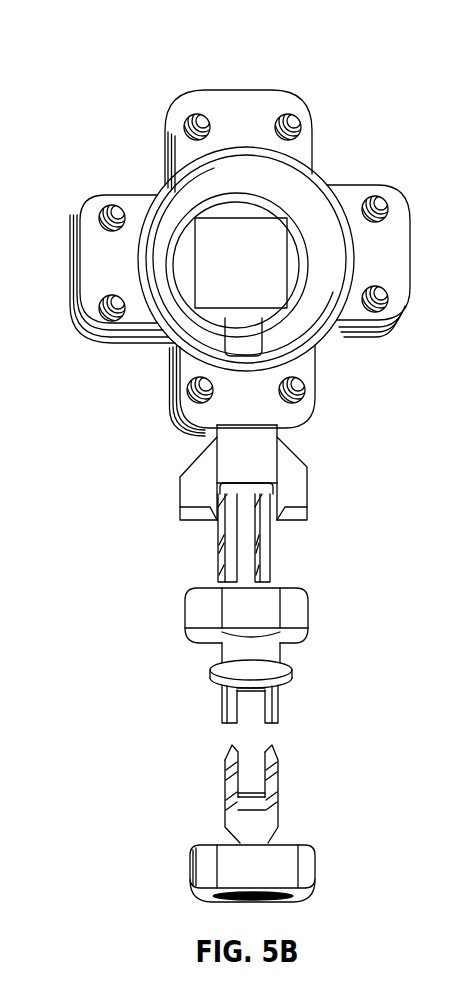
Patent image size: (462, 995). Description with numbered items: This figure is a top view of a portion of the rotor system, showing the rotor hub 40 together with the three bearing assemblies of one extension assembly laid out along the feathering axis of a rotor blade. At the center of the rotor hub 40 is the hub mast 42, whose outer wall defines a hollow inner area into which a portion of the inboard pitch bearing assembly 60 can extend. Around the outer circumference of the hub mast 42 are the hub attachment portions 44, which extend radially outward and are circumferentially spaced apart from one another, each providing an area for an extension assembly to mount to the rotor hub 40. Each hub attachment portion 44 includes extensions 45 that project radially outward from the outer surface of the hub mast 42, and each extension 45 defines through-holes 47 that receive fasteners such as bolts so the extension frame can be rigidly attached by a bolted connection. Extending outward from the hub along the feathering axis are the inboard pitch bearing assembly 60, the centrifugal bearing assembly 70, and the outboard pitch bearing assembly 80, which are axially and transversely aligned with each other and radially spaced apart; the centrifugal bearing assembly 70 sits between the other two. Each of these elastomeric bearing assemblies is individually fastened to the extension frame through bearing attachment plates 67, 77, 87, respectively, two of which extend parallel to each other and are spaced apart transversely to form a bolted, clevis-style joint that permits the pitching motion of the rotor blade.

The rotor hub 40 is at (234, 242).
The hub mast 42 is at (160, 190).
The hub attachment portions 44 is at (167, 162).
The extension 45 is at (313, 157).
The through-hole 47 is at (288, 112).
The inboard pitch bearing assembly 60 is at (266, 503).
The bearing attachment plate 67 is at (218, 548).
The centrifugal bearing assembly 70 is at (261, 664).
The bearing attachment plate 77 is at (222, 710).
The outboard pitch bearing assembly 80 is at (274, 823).
The bearing attachment plate 87 is at (227, 770).